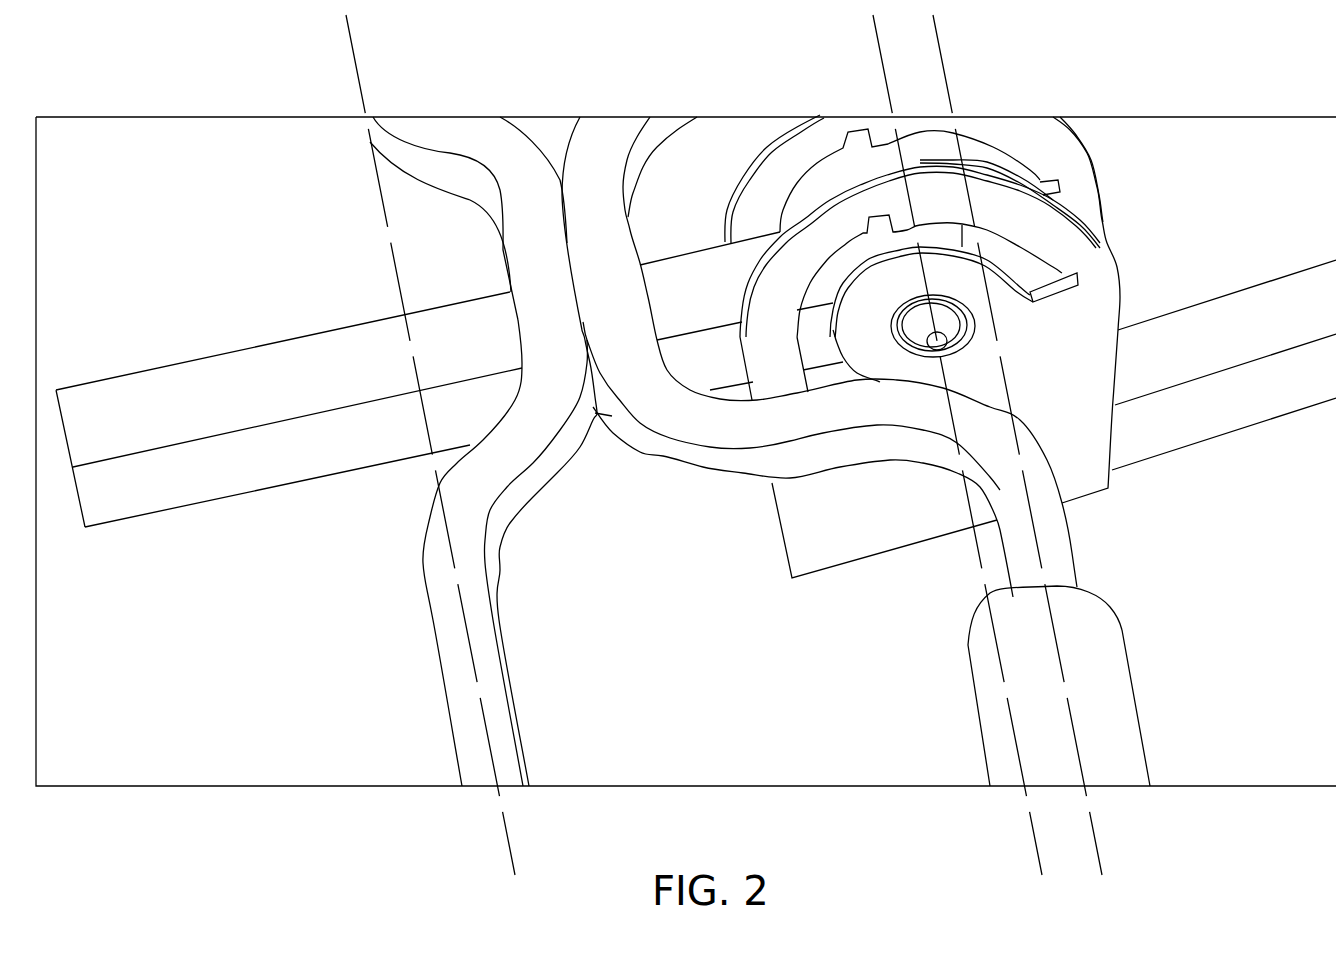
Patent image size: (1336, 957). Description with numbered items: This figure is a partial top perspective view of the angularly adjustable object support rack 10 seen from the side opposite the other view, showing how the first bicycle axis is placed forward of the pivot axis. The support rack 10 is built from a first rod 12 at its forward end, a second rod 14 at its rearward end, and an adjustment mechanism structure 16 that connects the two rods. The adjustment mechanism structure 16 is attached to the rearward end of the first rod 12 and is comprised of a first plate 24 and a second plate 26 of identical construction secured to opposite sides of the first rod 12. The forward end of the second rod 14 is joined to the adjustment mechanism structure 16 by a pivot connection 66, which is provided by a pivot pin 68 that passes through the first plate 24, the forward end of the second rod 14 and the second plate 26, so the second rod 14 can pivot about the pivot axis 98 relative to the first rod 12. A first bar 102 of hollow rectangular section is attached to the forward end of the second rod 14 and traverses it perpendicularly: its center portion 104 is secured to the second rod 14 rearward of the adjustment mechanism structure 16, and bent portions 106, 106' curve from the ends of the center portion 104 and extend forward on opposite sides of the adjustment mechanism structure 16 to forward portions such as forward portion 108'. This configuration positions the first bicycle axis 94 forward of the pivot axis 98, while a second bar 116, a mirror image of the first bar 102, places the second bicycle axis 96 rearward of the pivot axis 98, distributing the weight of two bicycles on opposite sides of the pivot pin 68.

The support rack 10 is at (838, 632).
The first rod 12 is at (1312, 272).
The second rod 14 is at (262, 352).
The adjustment mechanism structure 16 is at (1107, 183).
The first plate 24 is at (1065, 152).
The second plate 26 is at (1117, 270).
The pivot connection 66 is at (916, 300).
The pivot pin 68 is at (952, 332).
The first bicycle axis 94 is at (1092, 835).
The second bicycle axis 96 is at (500, 835).
The pivot axis 98 is at (1030, 835).
The first bar 102 is at (1072, 548).
The center portion 104 is at (613, 270).
The bent portion 106 is at (680, 259).
The bent portion 106' is at (791, 416).
The forward portion 108' is at (735, 477).
The second bar 116 is at (438, 676).